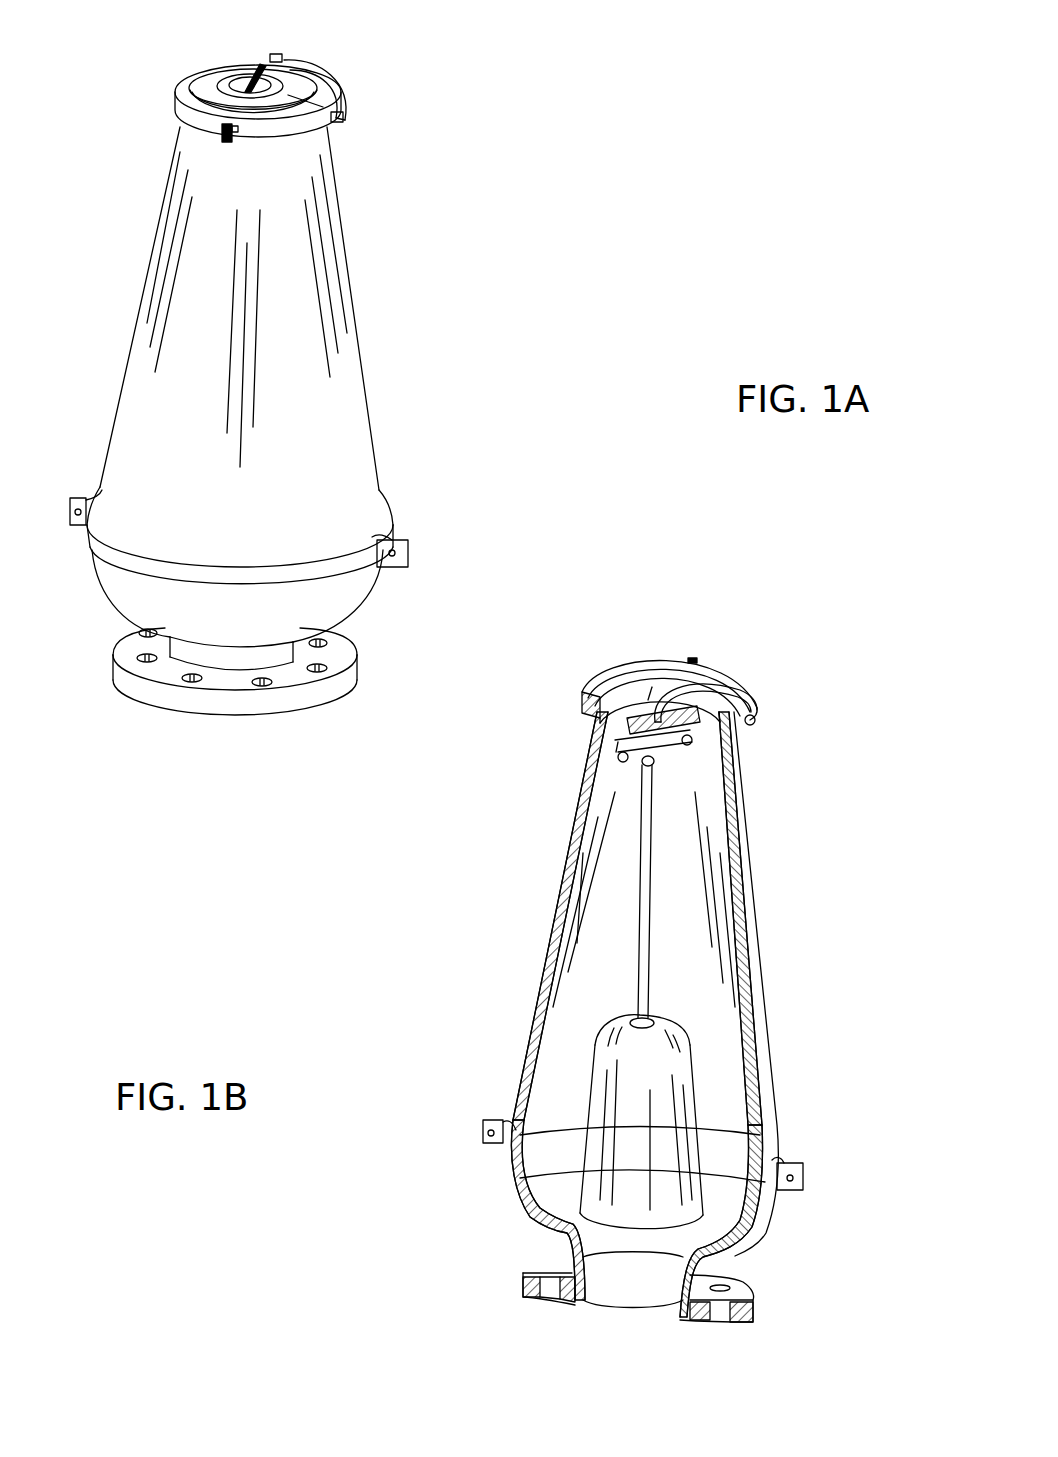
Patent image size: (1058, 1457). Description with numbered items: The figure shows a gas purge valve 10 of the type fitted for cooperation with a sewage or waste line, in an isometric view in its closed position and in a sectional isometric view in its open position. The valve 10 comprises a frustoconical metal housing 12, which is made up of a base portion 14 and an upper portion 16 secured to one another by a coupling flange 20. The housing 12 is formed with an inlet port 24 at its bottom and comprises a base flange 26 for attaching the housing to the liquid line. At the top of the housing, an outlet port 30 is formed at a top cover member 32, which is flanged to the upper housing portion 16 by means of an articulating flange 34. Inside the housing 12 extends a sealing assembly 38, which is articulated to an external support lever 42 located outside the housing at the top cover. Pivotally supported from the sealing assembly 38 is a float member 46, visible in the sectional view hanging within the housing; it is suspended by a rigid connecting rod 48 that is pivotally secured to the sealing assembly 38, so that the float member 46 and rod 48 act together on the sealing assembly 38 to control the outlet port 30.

In FIG. 1A, the gas purge valve 10 is at (438, 370).
In FIG. 1B, the gas purge valve 10 is at (492, 1008).
In FIG. 1A, the housing 12 is at (350, 268).
In FIG. 1B, the housing 12 is at (760, 930).
In FIG. 1A, the base portion 14 is at (325, 612).
In FIG. 1B, the base portion 14 is at (764, 1245).
In FIG. 1A, the upper portion 16 is at (158, 280).
In FIG. 1B, the upper portion 16 is at (732, 864).
In FIG. 1B, the coupling flange 20 is at (775, 1165).
In FIG. 1B, the inlet port 24 is at (630, 1280).
In FIG. 1A, the base flange 26 is at (128, 652).
In FIG. 1B, the base flange 26 is at (560, 1268).
In FIG. 1A, the outlet port 30 is at (234, 88).
In FIG. 1B, the outlet port 30 is at (652, 688).
In FIG. 1A, the top cover member 32 is at (190, 106).
In FIG. 1B, the top cover member 32 is at (584, 714).
In FIG. 1A, the articulating flange 34 is at (200, 117).
In FIG. 1B, the articulating flange 34 is at (583, 692).
In FIG. 1A, the sealing assembly 38 is at (256, 70).
In FIG. 1B, the sealing assembly 38 is at (706, 735).
In FIG. 1A, the external support lever 42 is at (322, 96).
In FIG. 1B, the external support lever 42 is at (740, 693).
In FIG. 1B, the float member 46 is at (685, 1022).
In FIG. 1B, the rigid connecting rod 48 is at (647, 865).